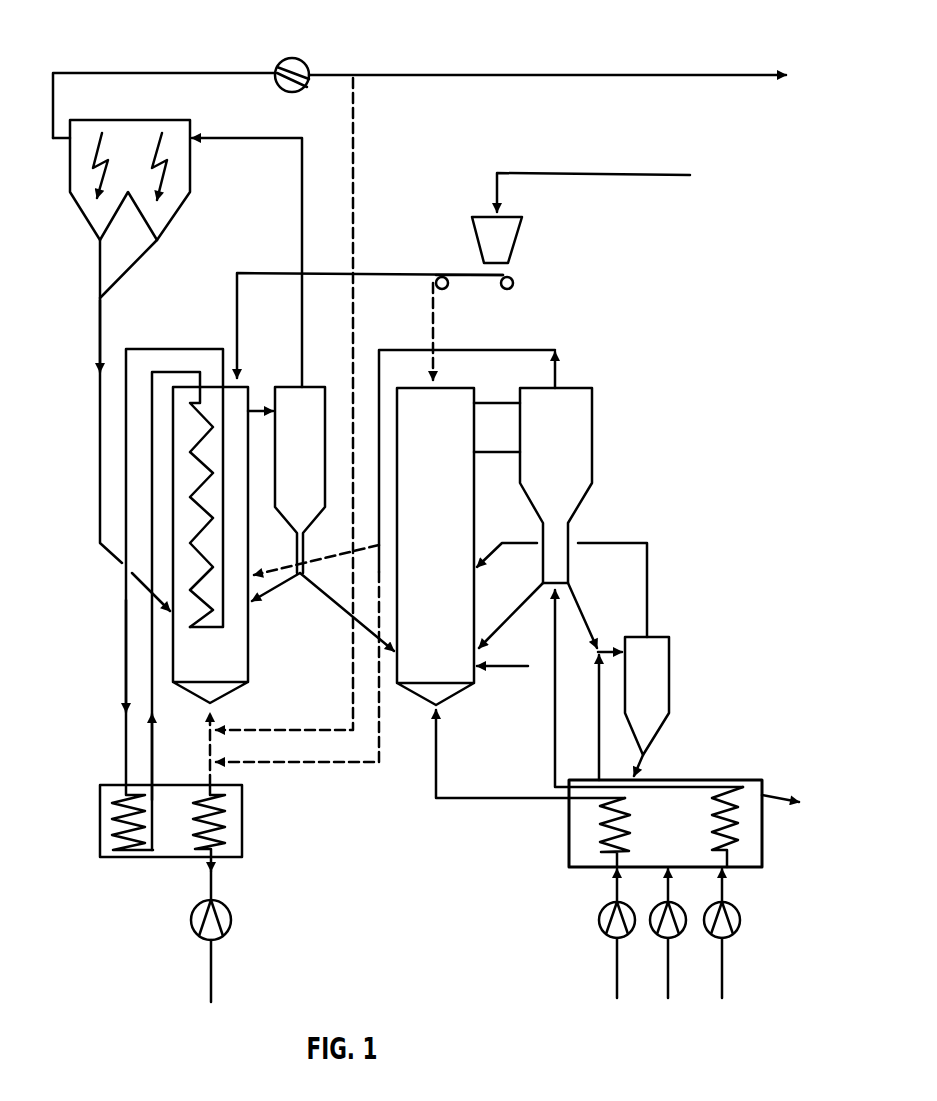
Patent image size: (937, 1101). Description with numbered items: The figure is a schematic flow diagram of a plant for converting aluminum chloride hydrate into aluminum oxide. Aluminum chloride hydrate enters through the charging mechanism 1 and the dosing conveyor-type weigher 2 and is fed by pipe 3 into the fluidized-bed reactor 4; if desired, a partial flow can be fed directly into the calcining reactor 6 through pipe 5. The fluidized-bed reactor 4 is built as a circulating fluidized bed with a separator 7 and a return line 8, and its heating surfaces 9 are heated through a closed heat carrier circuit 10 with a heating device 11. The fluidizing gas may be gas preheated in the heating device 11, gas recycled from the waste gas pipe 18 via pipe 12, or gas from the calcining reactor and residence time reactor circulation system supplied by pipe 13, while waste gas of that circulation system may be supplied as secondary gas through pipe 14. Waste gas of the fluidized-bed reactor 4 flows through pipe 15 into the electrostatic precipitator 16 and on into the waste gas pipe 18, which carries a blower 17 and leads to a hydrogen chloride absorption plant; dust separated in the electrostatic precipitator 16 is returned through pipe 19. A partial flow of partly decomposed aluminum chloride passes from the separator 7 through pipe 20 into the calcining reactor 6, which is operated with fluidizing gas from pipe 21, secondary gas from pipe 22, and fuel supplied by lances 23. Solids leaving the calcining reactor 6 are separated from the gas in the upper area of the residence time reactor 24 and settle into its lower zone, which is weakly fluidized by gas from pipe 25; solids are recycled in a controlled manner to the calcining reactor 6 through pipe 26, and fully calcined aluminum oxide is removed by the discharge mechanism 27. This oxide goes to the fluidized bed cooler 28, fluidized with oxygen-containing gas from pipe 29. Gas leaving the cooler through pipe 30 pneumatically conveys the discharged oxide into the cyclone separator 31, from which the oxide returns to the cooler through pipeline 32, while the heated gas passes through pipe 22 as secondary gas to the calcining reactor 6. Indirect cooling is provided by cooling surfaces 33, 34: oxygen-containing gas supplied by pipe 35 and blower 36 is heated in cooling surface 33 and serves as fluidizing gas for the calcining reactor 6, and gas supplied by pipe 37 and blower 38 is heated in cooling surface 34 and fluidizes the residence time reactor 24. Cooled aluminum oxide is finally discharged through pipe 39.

The charging mechanism 1 is at (518, 240).
The dosing conveyor-type weigher 2 is at (476, 283).
The pipe 3 is at (270, 273).
The fluidized-bed reactor 4 is at (188, 693).
The pipe 5 is at (430, 306).
The calcining reactor 6 is at (413, 698).
The separator 7 is at (312, 386).
The return line 8 is at (280, 587).
The heating surfaces 9 is at (202, 485).
The closed heat carrier circuit 10 is at (152, 658).
The heating device 11 is at (132, 858).
The pipe 12 is at (354, 148).
The pipe 13 is at (523, 348).
The pipe 14 is at (313, 558).
The pipe 15 is at (302, 180).
The electrostatic precipitator 16 is at (83, 217).
The blower 17 is at (295, 57).
The waste gas pipe 18 is at (485, 76).
The pipe 19 is at (99, 418).
The pipe 20 is at (340, 613).
The pipe 21 is at (452, 798).
The pipe 22 is at (647, 592).
The lances 23 is at (528, 666).
The residence time reactor 24 is at (592, 436).
The pipe 25 is at (552, 718).
The pipe 26 is at (518, 608).
The discharge mechanism 27 is at (577, 602).
The fluidized bed cooler 28 is at (568, 850).
The pipe 29 is at (668, 973).
The pipe 30 is at (598, 737).
The cyclone separator 31 is at (669, 658).
The pipeline 32 is at (653, 758).
The cooling surface 33 is at (603, 815).
The cooling surface 34 is at (713, 803).
The pipe 35 is at (617, 960).
The blower 36 is at (600, 913).
The pipe 37 is at (722, 970).
The blower 38 is at (738, 912).
The pipe 39 is at (773, 793).